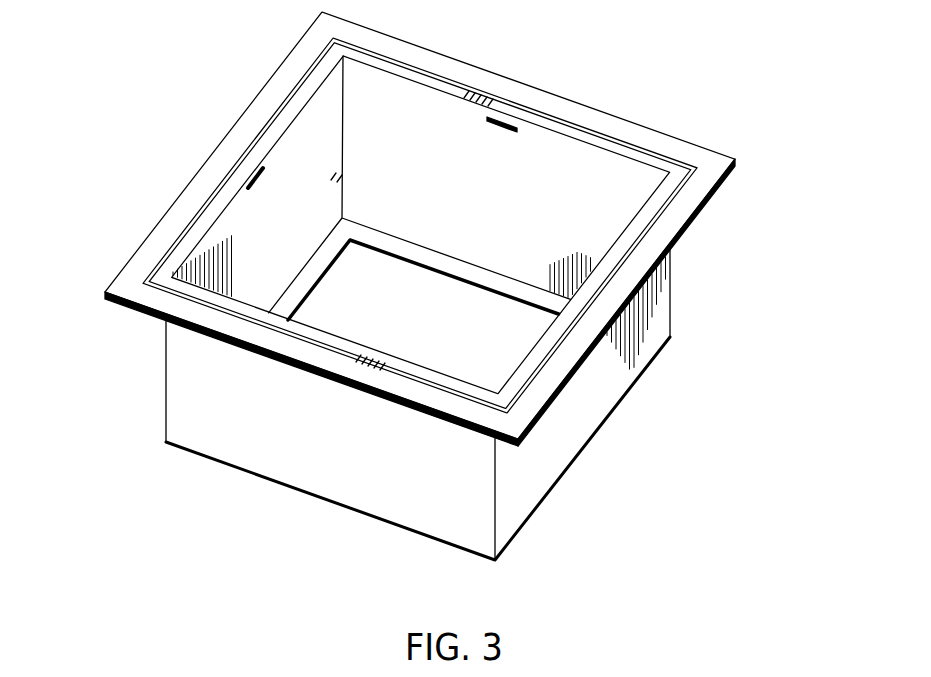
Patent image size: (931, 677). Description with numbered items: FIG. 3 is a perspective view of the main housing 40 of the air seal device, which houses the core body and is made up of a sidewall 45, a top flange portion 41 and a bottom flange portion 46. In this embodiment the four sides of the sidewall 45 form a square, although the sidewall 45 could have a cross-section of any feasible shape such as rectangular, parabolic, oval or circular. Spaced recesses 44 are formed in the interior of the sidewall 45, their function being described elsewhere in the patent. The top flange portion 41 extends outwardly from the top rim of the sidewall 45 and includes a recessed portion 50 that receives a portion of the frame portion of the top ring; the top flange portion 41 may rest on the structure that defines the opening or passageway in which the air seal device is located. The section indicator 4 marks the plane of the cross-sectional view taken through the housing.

The main housing 40 is at (735, 428).
The top flange portion 41 is at (703, 168).
The recesses 44 is at (262, 183).
The sidewall 45 is at (370, 487).
The bottom flange portion 46 is at (424, 258).
The recessed portion 50 is at (652, 162).
The section line 4- 4 is at (145, 112).